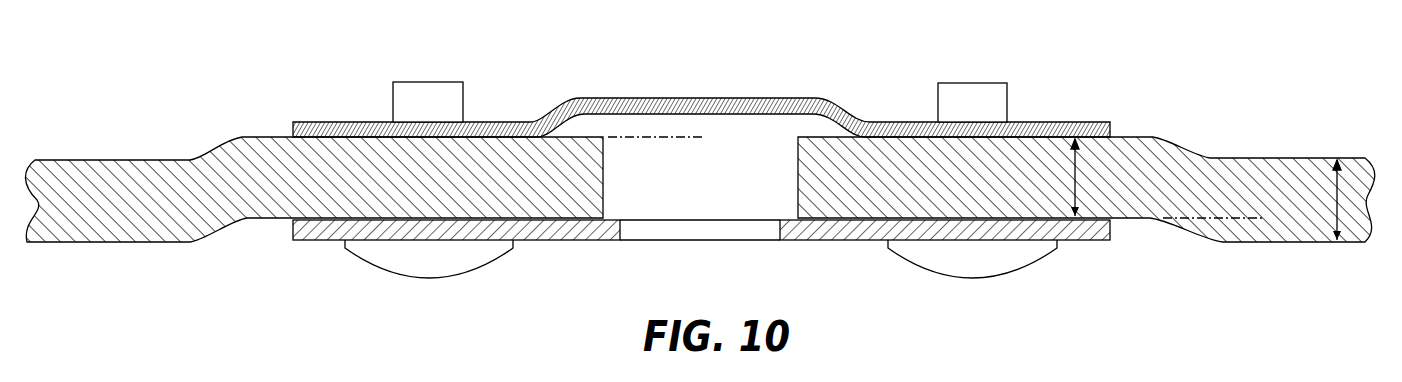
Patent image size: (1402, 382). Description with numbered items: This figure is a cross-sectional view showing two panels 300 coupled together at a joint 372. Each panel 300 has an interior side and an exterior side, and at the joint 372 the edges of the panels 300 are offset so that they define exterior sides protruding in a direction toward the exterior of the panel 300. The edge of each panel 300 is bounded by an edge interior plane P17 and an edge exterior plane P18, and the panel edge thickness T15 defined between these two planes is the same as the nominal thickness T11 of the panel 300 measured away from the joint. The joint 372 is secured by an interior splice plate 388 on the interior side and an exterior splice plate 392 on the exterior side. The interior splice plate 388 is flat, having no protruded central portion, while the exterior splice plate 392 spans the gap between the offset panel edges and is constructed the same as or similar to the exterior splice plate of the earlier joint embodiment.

The panel 300 is at (102, 185).
The joint 372 is at (858, 66).
The interior splice plate 388 is at (318, 240).
The exterior splice plate 392 is at (507, 121).
The edge exterior plane P18 is at (645, 139).
The edge interior plane P17 is at (1222, 245).
The panel edge thickness T15 is at (1080, 175).
The nominal thickness T11 is at (1336, 210).